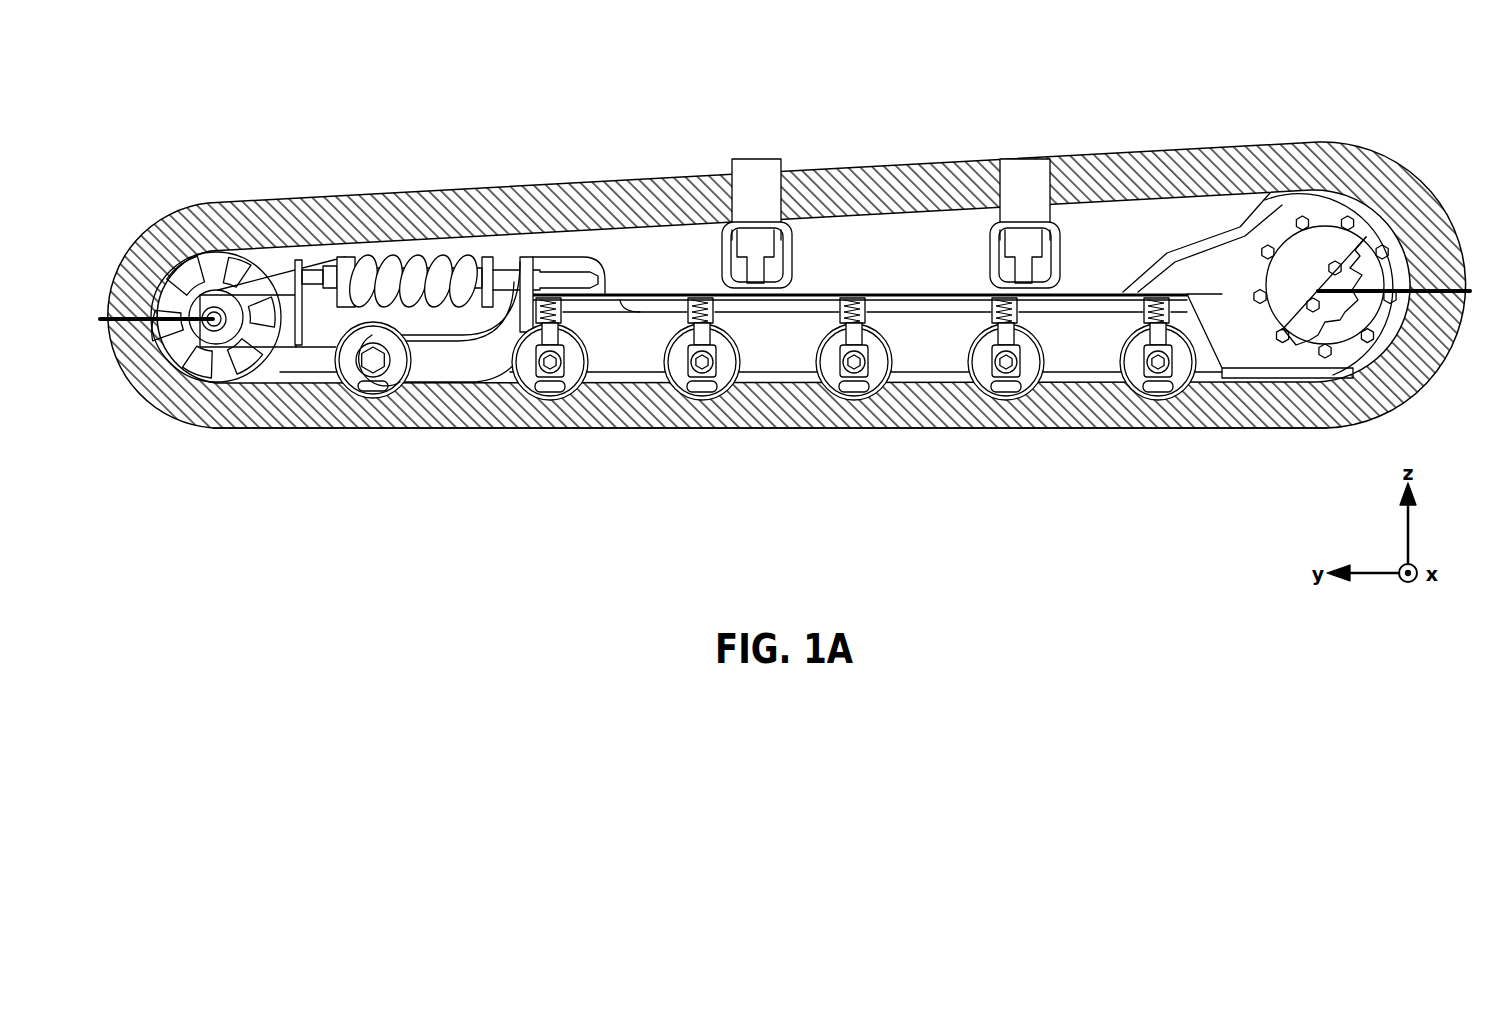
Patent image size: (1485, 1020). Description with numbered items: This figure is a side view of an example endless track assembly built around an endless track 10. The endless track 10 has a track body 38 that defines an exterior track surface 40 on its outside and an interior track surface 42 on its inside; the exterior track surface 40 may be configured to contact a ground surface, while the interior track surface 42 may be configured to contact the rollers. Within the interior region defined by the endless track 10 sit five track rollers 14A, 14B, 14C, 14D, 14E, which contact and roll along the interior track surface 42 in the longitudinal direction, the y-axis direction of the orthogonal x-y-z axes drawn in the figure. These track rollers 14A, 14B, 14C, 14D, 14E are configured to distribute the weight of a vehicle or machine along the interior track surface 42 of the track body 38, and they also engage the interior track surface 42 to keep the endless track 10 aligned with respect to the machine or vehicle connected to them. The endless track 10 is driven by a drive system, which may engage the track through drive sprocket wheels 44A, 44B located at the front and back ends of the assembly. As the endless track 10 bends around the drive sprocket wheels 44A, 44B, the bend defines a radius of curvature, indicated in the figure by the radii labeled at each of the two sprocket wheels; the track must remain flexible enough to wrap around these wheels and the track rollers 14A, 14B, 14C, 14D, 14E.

The endless track 10 is at (208, 141).
The track body 38 is at (570, 205).
The exterior track surface 40 is at (428, 430).
The interior track surface 42 is at (802, 372).
The drive sprocket wheel 44A is at (210, 363).
The drive sprocket wheel 44B is at (1312, 225).
The track roller 14A is at (573, 368).
The track roller 14B is at (728, 366).
The track roller 14C is at (878, 366).
The track roller 14D is at (1030, 366).
The track roller 14E is at (1155, 394).